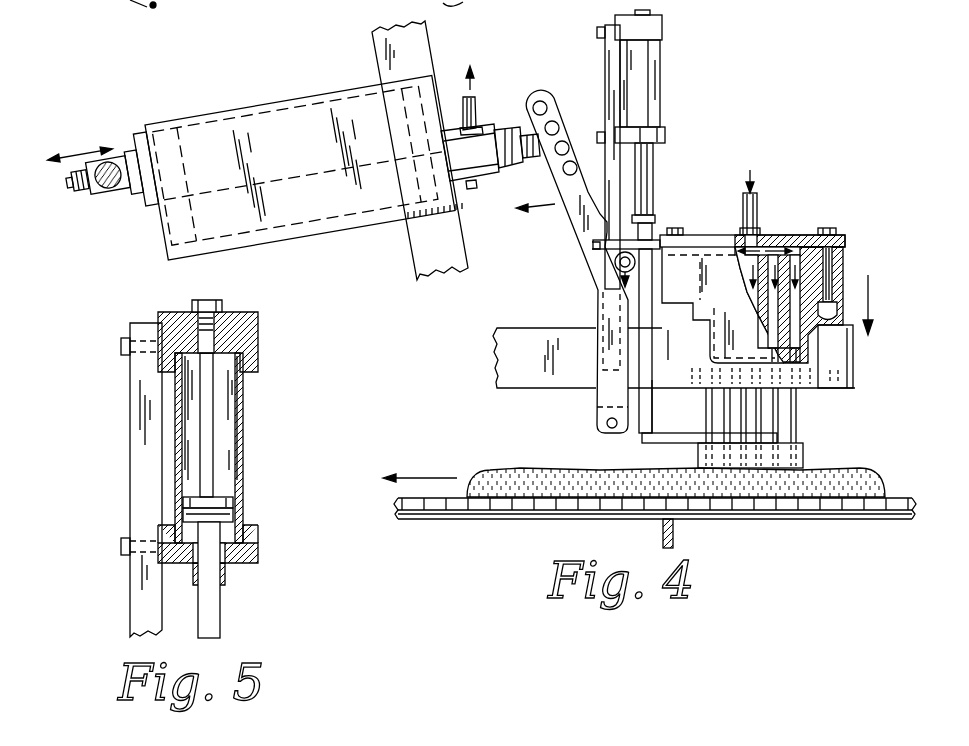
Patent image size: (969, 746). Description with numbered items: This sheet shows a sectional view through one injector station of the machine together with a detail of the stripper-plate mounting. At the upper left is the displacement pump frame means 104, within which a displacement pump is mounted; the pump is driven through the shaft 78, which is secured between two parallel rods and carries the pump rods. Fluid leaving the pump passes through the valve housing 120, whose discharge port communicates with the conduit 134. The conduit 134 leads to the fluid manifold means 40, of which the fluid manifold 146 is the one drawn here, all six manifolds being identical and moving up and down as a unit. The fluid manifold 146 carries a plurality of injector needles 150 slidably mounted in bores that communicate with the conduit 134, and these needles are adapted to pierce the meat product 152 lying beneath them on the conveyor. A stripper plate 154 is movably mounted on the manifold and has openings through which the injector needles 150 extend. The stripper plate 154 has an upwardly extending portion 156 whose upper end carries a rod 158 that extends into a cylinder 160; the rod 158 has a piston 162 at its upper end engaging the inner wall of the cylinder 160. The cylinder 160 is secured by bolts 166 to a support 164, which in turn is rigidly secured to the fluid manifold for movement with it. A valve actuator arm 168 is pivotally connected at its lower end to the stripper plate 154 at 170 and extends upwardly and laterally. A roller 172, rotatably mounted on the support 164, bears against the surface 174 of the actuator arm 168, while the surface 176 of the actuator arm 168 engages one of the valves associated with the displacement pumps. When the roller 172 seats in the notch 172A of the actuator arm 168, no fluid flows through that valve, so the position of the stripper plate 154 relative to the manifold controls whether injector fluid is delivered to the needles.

In FIG. 4, the fluid manifold means 40 is at (854, 226).
In FIG. 4, the shaft 78 is at (108, 190).
In FIG. 4, the displacement pump frame means 104 is at (297, 88).
In FIG. 4, the valve housing 120 is at (482, 182).
In FIG. 4, the conduit 134 is at (475, 100).
In FIG. 4, the fluid manifold 146 is at (820, 278).
In FIG. 4, the injector needles 150 is at (797, 412).
In FIG. 4, the meat product 152 is at (520, 470).
In FIG. 4, the stripper plate 154 is at (670, 440).
In FIG. 4, the upwardly extending portion 156 is at (643, 308).
In FIG. 4, the rod 158 is at (642, 203).
In FIG. 5, the rod 158 is at (220, 618).
In FIG. 4, the cylinder 160 is at (645, 75).
In FIG. 5, the cylinder 160 is at (243, 435).
In FIG. 5, the piston 162 is at (220, 497).
In FIG. 4, the support 164 is at (607, 82).
In FIG. 5, the support 164 is at (130, 470).
In FIG. 4, the bolts 166 is at (600, 26).
In FIG. 5, the bolts 166 is at (122, 345).
In FIG. 4, the valve actuator arm 168 is at (590, 237).
In FIG. 4, the pivotal connection 170 is at (606, 424).
In FIG. 4, the roller 172 is at (615, 262).
In FIG. 4, the notch 172A is at (605, 228).
In FIG. 4, the surface 174 is at (588, 191).
In FIG. 4, the surface 176 is at (575, 217).